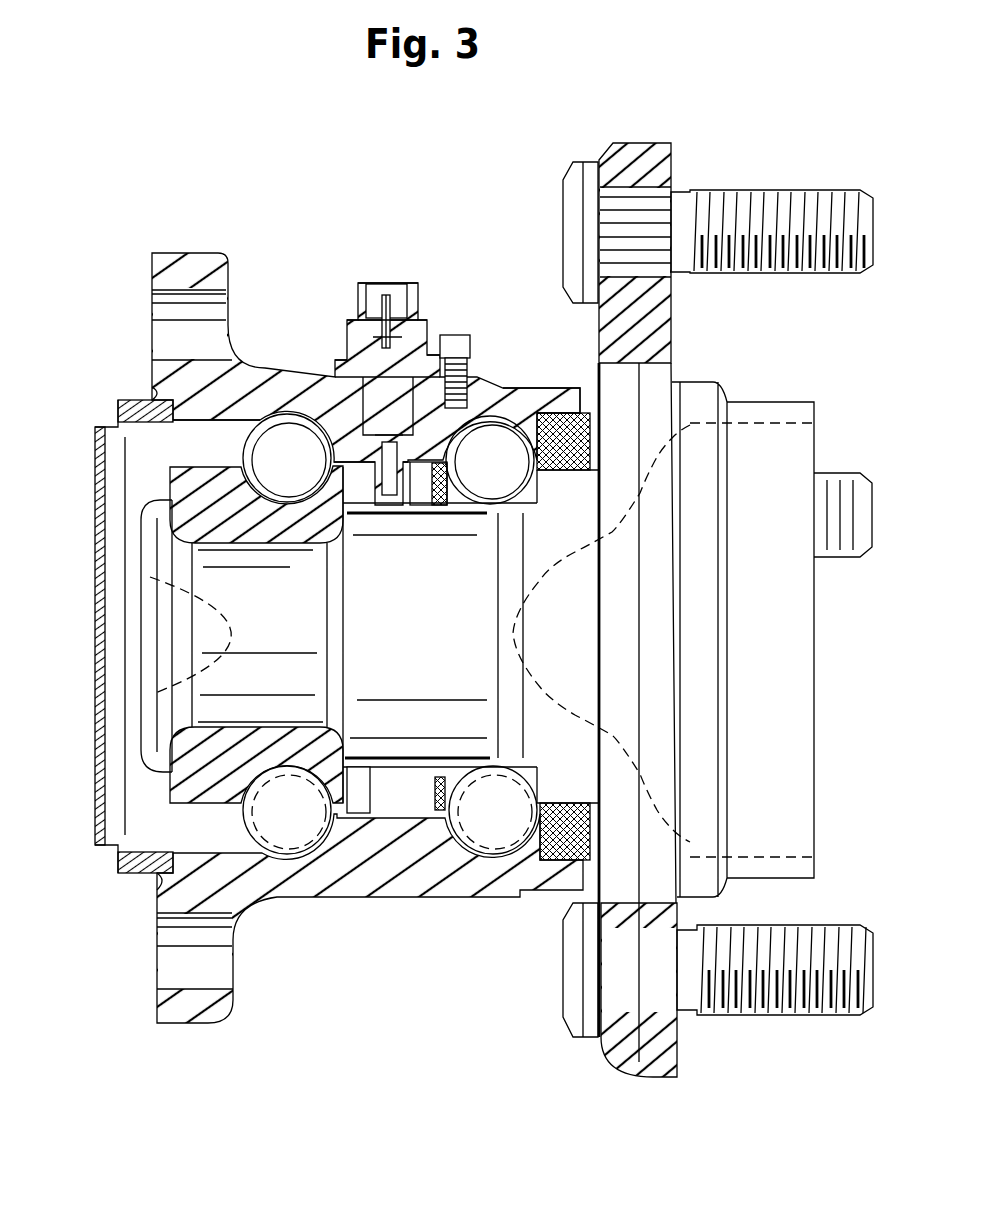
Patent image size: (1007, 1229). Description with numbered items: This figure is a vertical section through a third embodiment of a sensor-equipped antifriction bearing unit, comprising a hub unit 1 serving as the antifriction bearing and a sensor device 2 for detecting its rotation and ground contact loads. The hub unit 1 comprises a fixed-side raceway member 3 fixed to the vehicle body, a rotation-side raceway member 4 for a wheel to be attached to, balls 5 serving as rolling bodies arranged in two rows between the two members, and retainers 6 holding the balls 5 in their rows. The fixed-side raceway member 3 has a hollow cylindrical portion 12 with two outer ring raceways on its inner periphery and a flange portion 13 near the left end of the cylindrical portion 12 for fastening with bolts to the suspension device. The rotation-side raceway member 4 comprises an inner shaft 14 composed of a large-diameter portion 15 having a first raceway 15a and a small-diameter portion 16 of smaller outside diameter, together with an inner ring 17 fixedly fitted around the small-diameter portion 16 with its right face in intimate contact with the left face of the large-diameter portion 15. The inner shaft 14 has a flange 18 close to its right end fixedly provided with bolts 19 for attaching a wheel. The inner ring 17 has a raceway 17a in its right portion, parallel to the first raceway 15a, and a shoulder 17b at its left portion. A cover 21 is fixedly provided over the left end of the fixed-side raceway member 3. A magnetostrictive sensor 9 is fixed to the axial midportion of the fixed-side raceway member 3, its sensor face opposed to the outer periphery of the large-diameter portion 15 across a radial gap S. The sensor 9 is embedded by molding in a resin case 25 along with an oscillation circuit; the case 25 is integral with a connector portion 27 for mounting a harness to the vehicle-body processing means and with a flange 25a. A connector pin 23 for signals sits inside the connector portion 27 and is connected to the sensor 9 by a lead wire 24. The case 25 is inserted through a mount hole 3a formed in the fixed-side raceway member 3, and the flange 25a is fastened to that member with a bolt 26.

The hub unit 1 is at (760, 390).
The sensor device 2 is at (488, 393).
The fixed-side raceway member 3 is at (500, 374).
The mount hole 3a is at (352, 480).
The rotation-side raceway member 4 is at (432, 905).
The balls 5 is at (282, 433).
The retainers 6 is at (340, 440).
The magnetostrictive sensor 9 is at (396, 505).
The radial gap S is at (405, 505).
The hollow cylindrical portion 12 is at (402, 768).
The flange portion 13 is at (217, 1002).
The inner shaft 14 is at (372, 768).
The large-diameter portion 15 is at (418, 750).
The first raceway 15a is at (537, 862).
The small-diameter portion 16 is at (233, 677).
The inner ring 17 is at (195, 782).
The raceway 17a is at (276, 778).
The shoulder 17b is at (200, 817).
The flange 18 is at (660, 313).
The bolts 19 is at (790, 205).
The cover 21 is at (93, 650).
The connector pin 23 is at (383, 290).
The lead wire 24 is at (350, 322).
The resin case 25 is at (430, 300).
The flange 25a is at (411, 484).
The bolt 26 is at (445, 337).
The connector portion 27 is at (362, 292).